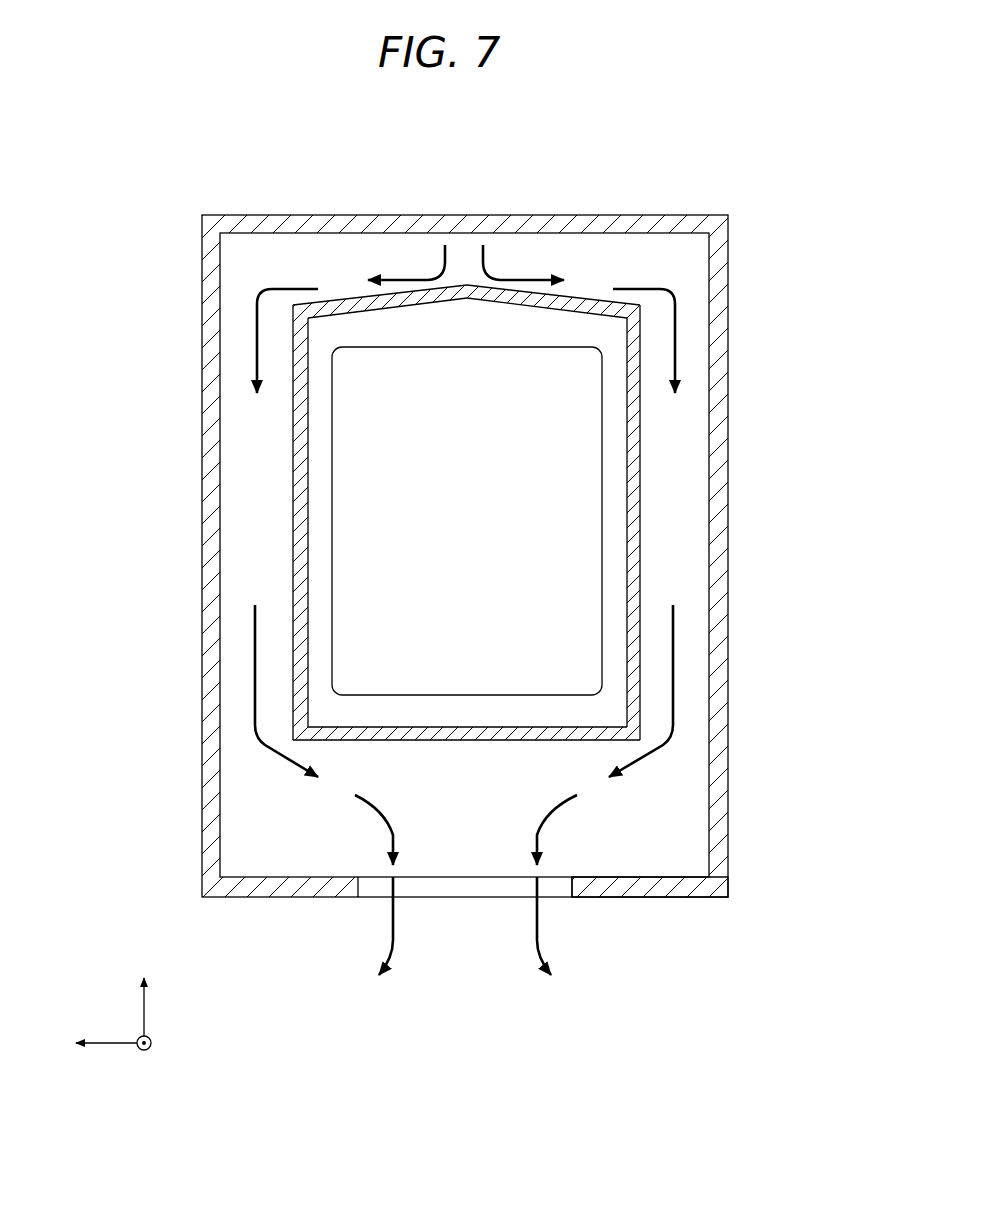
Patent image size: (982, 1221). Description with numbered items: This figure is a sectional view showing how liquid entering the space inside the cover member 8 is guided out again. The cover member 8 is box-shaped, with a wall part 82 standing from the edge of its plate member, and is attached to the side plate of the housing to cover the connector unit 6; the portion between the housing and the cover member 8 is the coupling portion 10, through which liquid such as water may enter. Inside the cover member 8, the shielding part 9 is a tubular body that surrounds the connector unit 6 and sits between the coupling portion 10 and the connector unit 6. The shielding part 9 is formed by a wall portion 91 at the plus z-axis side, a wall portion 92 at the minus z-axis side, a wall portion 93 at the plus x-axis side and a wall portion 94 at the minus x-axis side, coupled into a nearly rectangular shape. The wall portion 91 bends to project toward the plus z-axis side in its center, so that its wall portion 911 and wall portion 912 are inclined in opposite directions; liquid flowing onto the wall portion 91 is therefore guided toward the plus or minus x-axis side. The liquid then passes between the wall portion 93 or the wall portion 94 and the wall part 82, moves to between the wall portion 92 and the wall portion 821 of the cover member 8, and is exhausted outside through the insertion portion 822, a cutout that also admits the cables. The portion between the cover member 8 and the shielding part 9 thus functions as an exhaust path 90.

The coupling portion 10 is at (262, 242).
The cover member 8 is at (680, 214).
The wall part 82 is at (622, 226).
The wall portion 821 is at (643, 898).
The insertion portion 822 is at (462, 898).
The shielding part 9 is at (598, 302).
The wall portion 91 is at (560, 143).
The wall portion 911 is at (345, 300).
The wall portion 912 is at (587, 302).
The wall portion 93 is at (300, 508).
The wall portion 94 is at (640, 463).
The wall portion 92 is at (556, 742).
The exhaust path 90 is at (667, 422).
The connector unit 6 is at (540, 535).